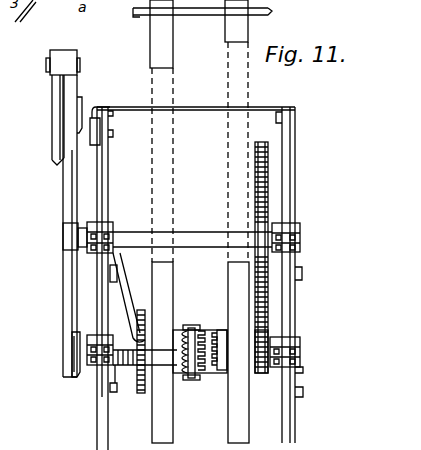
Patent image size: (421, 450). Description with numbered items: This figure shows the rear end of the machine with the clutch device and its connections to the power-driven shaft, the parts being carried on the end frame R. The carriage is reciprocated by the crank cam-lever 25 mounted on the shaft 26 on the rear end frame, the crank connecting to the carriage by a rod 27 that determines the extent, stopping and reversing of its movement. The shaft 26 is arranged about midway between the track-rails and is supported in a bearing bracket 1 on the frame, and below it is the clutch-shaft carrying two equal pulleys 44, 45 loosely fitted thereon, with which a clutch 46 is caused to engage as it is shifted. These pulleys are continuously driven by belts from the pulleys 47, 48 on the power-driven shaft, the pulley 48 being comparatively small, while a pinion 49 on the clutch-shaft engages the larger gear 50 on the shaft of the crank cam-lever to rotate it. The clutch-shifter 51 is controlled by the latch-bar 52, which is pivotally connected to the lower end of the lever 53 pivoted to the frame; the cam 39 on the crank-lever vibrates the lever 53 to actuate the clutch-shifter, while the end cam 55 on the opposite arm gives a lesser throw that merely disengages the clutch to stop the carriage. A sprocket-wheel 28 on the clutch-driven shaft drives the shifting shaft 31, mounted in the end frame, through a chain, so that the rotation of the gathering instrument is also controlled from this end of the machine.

The frame R is at (108, 198).
The bearing bracket 1 is at (92, 135).
The crank cam-lever 25 is at (67, 187).
The shaft 26 is at (188, 236).
The rod 27 is at (55, 110).
The sprocket-wheel 28 is at (140, 311).
The shifting shaft 31 is at (215, 387).
The cam 39 is at (83, 104).
The pulley 44 is at (172, 301).
The pulley 45 is at (230, 290).
The clutch 46 is at (210, 352).
The pulley 47 is at (161, 131).
The pulley 48 is at (236, 131).
The pinion 49 is at (263, 378).
The gear 50 is at (270, 199).
The clutch-shifter 51 is at (193, 380).
The latch-bar 52 is at (302, 350).
The lever 53 is at (121, 284).
The end cam 55 is at (75, 343).